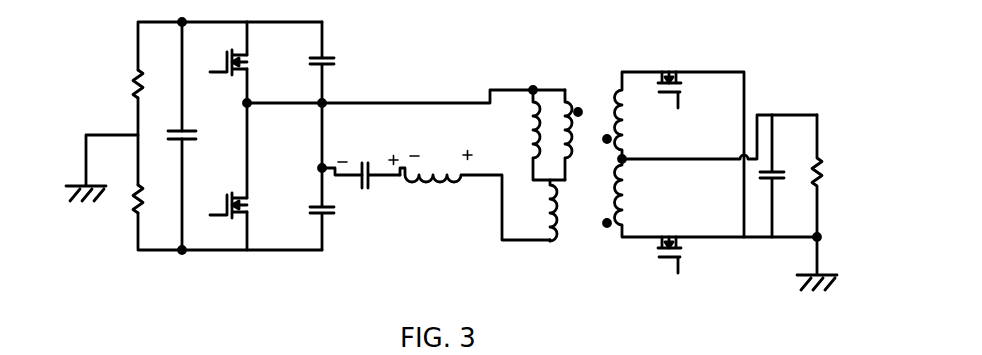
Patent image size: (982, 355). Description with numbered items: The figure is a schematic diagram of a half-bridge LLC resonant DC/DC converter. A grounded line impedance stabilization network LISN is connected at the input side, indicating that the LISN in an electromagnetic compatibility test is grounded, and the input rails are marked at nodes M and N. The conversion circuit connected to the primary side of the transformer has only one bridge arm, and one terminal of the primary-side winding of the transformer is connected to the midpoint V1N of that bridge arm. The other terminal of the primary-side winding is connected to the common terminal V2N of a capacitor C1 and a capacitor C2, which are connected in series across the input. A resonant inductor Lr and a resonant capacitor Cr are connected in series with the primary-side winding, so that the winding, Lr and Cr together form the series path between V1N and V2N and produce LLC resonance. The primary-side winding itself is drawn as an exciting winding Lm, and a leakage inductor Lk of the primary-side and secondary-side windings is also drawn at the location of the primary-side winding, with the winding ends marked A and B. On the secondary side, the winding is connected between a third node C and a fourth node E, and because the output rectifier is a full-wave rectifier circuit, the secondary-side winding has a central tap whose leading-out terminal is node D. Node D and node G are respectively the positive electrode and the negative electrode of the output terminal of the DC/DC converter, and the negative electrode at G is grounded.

The line impedance stabilization network LISN is at (81, 168).
The input positive terminal node M is at (180, 66).
The input negative terminal node N is at (180, 206).
The midpoint of the bridge arm V1N is at (382, 101).
The common terminal of capacitor C1 and capacitor C2 V2N is at (314, 174).
The capacitor C1 is at (339, 62).
The capacitor C2 is at (339, 209).
The resonant capacitor Cr is at (378, 164).
The resonant inductor Lr is at (475, 185).
The exciting winding Lm is at (528, 135).
The leakage inductor Lk is at (536, 210).
The transformer primary terminal A is at (539, 81).
The transformer primary terminal B is at (557, 251).
The third node C is at (680, 144).
The node D is at (718, 139).
The fourth node E is at (716, 198).
The node G is at (817, 262).